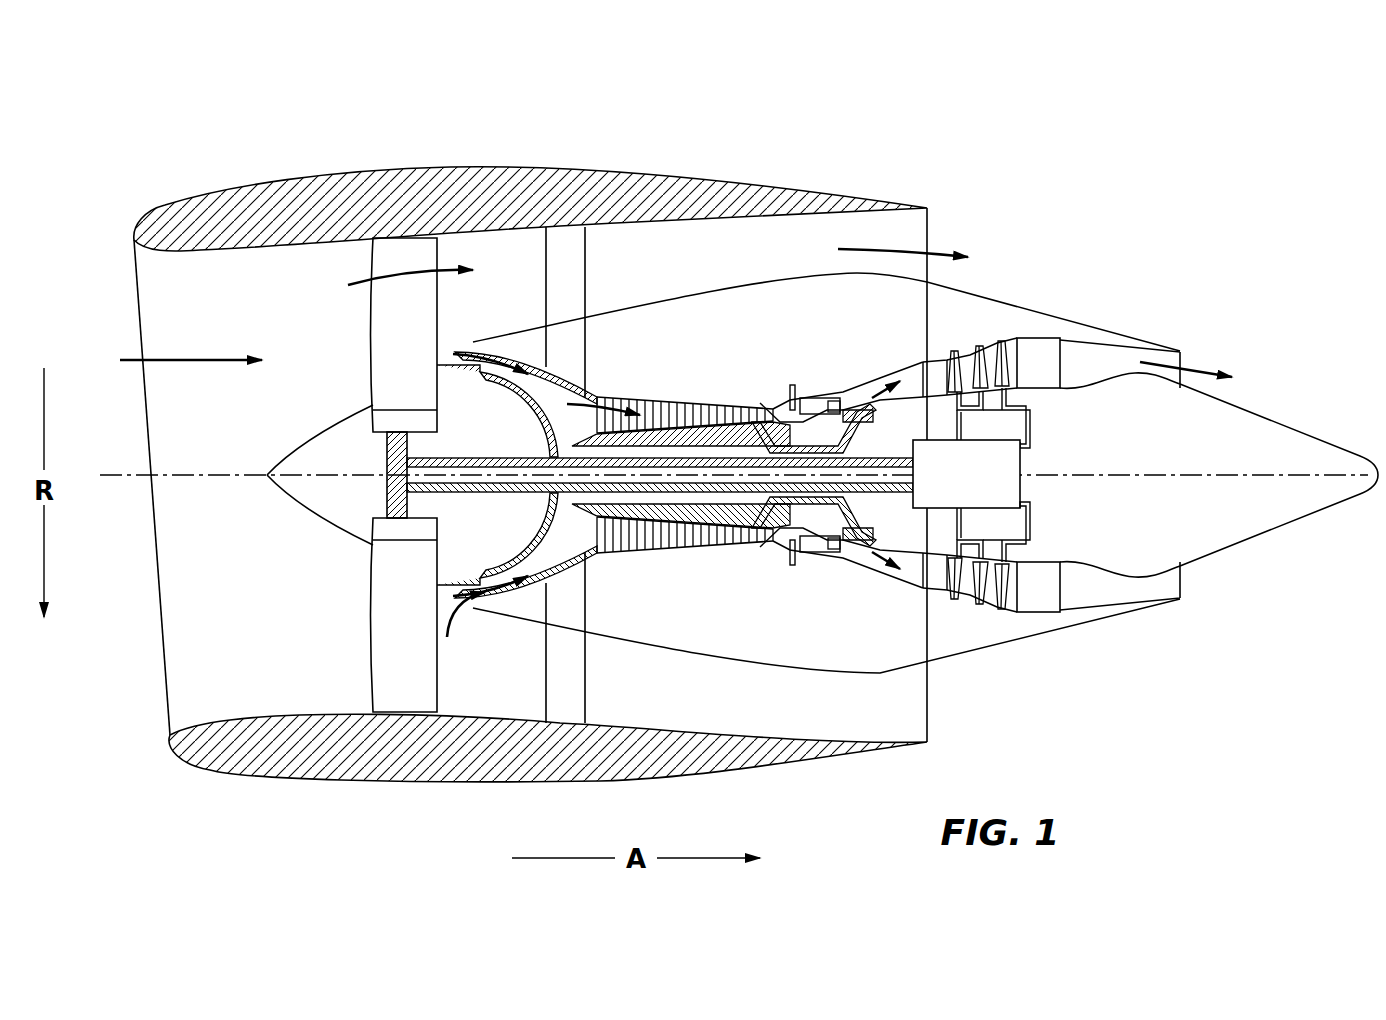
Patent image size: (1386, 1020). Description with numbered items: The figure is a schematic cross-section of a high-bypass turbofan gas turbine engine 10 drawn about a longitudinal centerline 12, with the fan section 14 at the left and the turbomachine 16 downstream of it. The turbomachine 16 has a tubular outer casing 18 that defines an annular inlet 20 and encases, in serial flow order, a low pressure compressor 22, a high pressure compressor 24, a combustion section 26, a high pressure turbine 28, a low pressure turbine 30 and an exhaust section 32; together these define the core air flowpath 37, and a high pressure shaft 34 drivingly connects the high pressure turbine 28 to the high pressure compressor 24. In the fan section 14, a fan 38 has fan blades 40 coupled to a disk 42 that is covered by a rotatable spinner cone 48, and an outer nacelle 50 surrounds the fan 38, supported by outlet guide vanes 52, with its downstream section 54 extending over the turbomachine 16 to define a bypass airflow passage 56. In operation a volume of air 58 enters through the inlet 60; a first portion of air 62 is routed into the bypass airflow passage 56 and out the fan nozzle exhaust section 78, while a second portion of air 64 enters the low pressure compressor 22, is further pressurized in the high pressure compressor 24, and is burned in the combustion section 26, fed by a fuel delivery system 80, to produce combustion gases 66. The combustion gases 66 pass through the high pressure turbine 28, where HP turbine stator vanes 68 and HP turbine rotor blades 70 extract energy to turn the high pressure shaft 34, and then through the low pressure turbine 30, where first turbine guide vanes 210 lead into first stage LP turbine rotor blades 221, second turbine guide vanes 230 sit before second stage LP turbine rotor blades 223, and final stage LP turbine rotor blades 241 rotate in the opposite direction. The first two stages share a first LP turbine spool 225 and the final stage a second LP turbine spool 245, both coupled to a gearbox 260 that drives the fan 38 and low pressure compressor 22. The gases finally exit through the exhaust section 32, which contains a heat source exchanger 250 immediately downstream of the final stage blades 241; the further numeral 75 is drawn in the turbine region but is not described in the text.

The gas turbine engine 10 is at (1085, 178).
The longitudinal centerline 12 is at (1289, 475).
The fan section 14 is at (420, 130).
The turbomachine 16 is at (754, 338).
The outer casing 18 is at (760, 658).
The annular inlet 20 is at (447, 637).
The low pressure compressor 22 is at (538, 536).
The high pressure compressor 24 is at (622, 542).
The combustion section 26 is at (809, 548).
The high pressure turbine 28 is at (898, 547).
The low pressure turbine 30 is at (1002, 618).
The exhaust section 32 is at (1092, 600).
The high pressure shaft 34 is at (780, 403).
The core air flowpath 37 is at (569, 560).
The fan 38 is at (333, 535).
The fan blades 40 is at (367, 633).
The disk 42 is at (387, 420).
The spinner cone 48 is at (287, 498).
The outer nacelle 50 is at (427, 783).
The outlet guide vanes 52 is at (585, 260).
The downstream section of the outer nacelle 54 is at (850, 197).
The bypass airflow passage 56 is at (697, 278).
The volume of air 58 is at (200, 358).
The inlet 60 is at (168, 712).
The first portion of air 62 is at (390, 278).
The second portion of air 64 is at (455, 352).
The combustion gases 66 is at (850, 395).
The HP turbine stator vanes 68 is at (830, 555).
The HP turbine rotor blades 70 is at (850, 558).
The LP turbine stator vanes 75 is at (915, 567).
The fan nozzle exhaust section 78 is at (908, 235).
The fuel delivery system 80 is at (952, 290).
The first turbine guide vanes 210 is at (892, 372).
The first stage LP turbine rotor blades 221 is at (950, 360).
The second stage LP turbine rotor blades 223 is at (997, 340).
The first LP turbine spool 225 is at (957, 430).
The second turbine guide vanes 230 is at (975, 350).
The final stage LP turbine rotor blades 241 is at (1010, 340).
The second LP turbine spool 245 is at (1032, 428).
The heat source exchanger 250 is at (1060, 345).
The gearbox 260 is at (1012, 465).